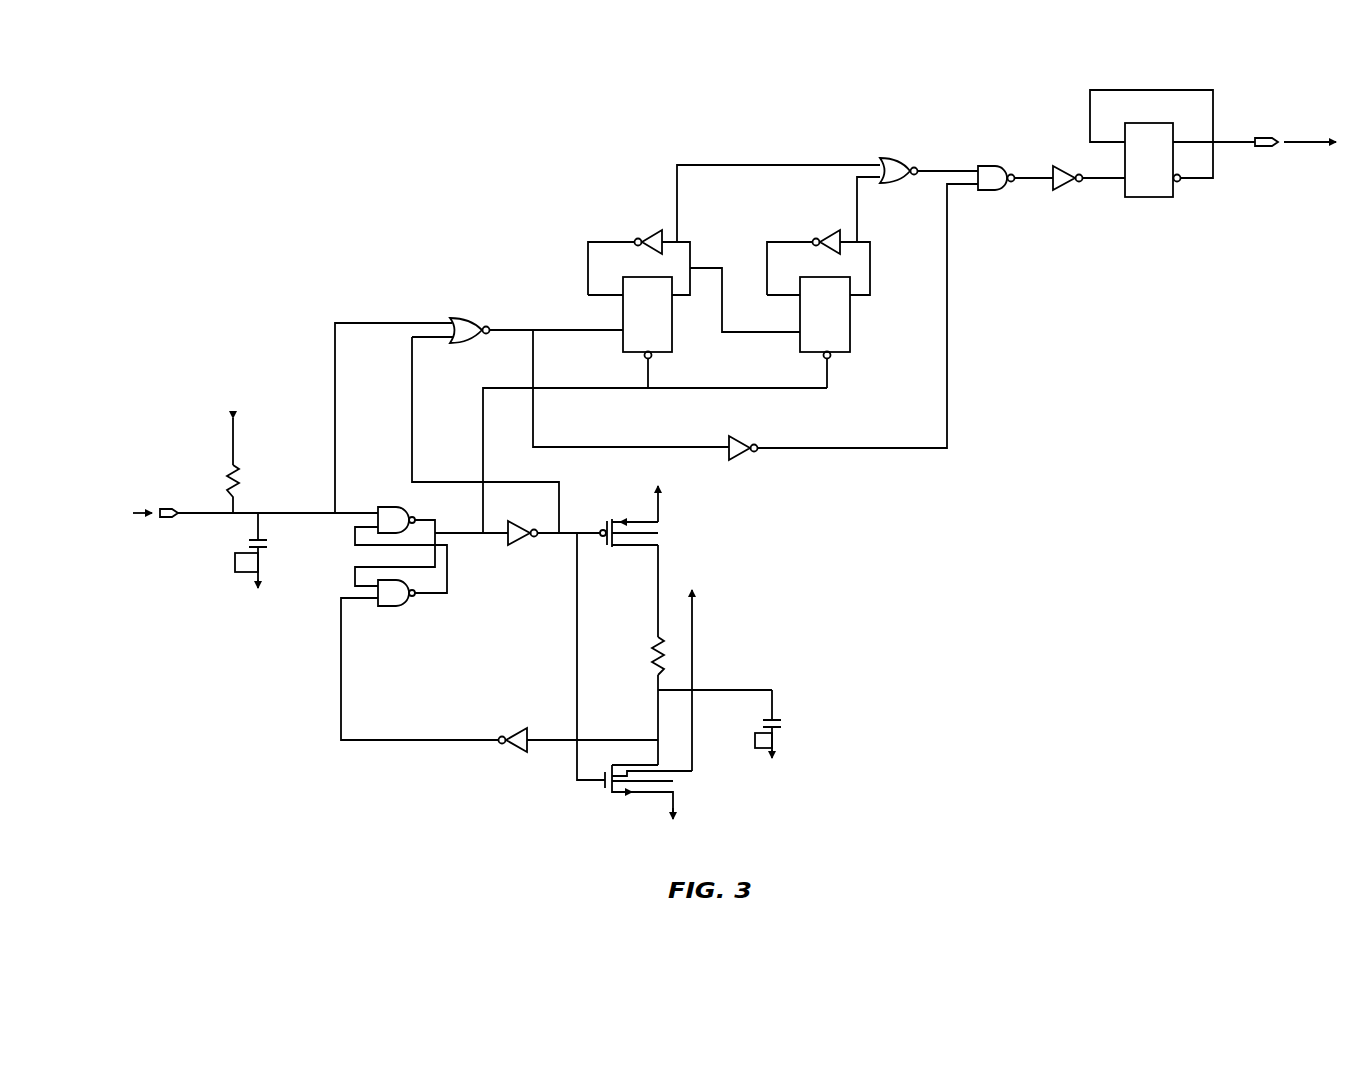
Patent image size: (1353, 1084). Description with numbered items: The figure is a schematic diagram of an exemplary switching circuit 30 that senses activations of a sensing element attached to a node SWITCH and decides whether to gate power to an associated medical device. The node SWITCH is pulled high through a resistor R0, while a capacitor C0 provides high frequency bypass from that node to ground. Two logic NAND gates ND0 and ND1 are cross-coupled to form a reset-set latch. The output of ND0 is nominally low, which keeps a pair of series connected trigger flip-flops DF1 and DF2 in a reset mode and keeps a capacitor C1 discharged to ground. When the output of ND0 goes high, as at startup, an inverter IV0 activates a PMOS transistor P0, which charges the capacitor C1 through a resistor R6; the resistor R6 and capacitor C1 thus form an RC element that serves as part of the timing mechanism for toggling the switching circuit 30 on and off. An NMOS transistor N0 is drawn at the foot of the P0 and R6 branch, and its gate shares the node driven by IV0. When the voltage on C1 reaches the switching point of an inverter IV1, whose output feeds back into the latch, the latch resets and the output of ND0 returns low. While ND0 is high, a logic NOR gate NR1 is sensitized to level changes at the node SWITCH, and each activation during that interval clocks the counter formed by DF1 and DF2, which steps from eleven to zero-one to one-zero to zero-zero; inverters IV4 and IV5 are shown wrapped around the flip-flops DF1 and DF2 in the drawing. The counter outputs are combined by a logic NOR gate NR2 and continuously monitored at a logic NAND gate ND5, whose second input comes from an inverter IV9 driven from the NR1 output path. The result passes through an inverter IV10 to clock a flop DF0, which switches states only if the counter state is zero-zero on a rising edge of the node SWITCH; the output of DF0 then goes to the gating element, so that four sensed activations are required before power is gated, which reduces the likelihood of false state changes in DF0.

The switching circuit 30 is at (421, 157).
The resistor R0 is at (227, 455).
The capacitor C0 is at (258, 563).
The logic NAND gate ND0 is at (396, 510).
The logic NAND gate ND1 is at (396, 602).
The logic NAND gate ND5 is at (996, 186).
The logic NOR gate NR1 is at (470, 341).
The logic NOR gate NR2 is at (899, 181).
The inverter IV0 is at (523, 541).
The inverter IV1 is at (513, 733).
The inverter IV4 is at (646, 237).
The inverter IV5 is at (824, 237).
The inverter IV9 is at (743, 456).
The inverter IV10 is at (1068, 186).
The flop DF0 is at (1154, 170).
The trigger (T) flip-flop DF1 is at (653, 324).
The trigger (T) flip-flop DF2 is at (831, 324).
The Positive-channel Metal-Oxide Semiconductor (PMOS) P0 is at (639, 533).
The NMOS transistor N0 is at (648, 801).
The resistor R6 is at (647, 656).
The capacitor C1 is at (777, 735).